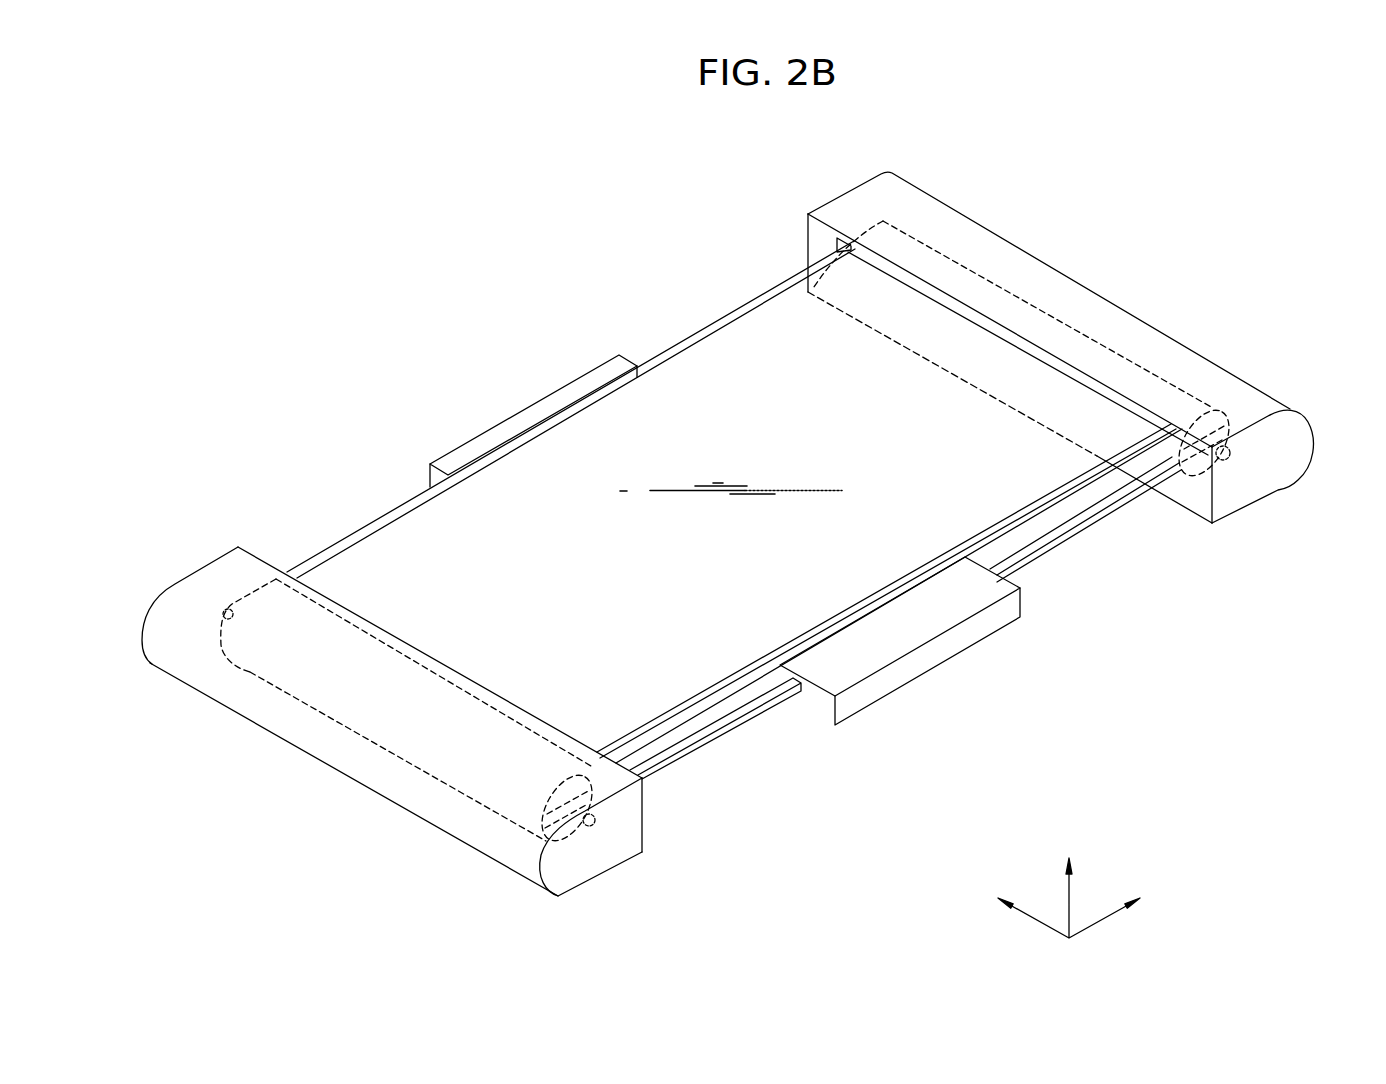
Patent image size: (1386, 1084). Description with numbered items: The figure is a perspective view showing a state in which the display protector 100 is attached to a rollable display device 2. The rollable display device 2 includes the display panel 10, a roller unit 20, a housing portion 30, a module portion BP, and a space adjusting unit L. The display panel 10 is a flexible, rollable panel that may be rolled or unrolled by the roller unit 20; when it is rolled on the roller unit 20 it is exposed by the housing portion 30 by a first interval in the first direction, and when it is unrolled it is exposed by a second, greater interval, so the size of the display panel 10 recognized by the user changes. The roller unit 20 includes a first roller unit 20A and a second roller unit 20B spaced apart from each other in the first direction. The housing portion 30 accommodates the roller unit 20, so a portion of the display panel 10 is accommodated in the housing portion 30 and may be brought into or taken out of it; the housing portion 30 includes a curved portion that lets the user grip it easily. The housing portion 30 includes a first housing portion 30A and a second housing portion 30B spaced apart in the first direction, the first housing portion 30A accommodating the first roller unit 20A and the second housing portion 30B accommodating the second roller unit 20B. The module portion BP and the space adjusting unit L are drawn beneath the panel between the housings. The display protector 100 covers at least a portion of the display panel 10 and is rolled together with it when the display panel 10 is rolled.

The rollable display device 2 is at (1122, 215).
The display panel 10 is at (402, 503).
The display protector 100 is at (580, 429).
The roller unit 20 is at (244, 835).
The first roller unit 20A is at (594, 816).
The second roller unit 20B is at (1223, 455).
The housing portion 30 is at (244, 901).
The first housing portion 30A is at (636, 840).
The second housing portion 30B is at (1290, 457).
The space adjusting unit L is at (748, 714).
The module portion BP is at (850, 707).